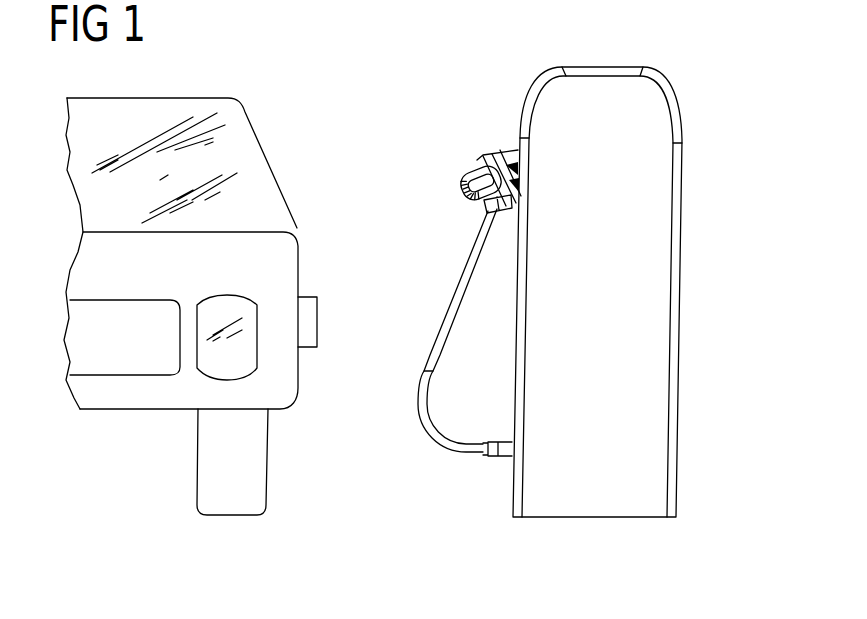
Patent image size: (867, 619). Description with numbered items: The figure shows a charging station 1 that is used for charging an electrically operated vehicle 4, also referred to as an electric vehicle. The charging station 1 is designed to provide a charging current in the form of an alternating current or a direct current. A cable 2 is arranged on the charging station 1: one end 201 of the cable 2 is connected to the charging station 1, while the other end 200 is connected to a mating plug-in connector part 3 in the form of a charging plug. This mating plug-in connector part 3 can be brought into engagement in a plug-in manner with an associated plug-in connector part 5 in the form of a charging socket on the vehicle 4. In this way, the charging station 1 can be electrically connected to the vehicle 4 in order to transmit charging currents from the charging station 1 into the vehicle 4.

The charging station 1 is at (694, 77).
The cable 2 is at (425, 461).
The mating plug-in connector part 3 is at (482, 138).
The electrically operated vehicle 4 is at (261, 80).
The plug-in connector part 5 is at (303, 325).
The end of cable 200 is at (466, 223).
The end of cable 201 is at (485, 470).